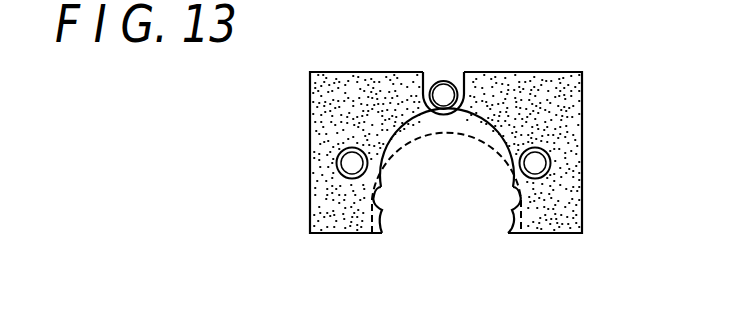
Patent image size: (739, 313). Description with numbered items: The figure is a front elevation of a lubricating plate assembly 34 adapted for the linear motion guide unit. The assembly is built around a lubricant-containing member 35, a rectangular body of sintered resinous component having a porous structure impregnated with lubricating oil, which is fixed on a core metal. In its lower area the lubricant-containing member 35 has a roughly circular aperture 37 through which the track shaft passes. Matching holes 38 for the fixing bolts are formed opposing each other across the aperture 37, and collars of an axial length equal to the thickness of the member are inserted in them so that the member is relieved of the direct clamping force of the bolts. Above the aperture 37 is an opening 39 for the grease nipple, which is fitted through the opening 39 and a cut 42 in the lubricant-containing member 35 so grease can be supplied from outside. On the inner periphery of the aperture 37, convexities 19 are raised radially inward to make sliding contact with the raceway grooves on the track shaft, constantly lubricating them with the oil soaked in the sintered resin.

The convexities 19 is at (384, 209).
The lubricating plate assembly 34 is at (524, 69).
The lubricant-containing member 35 is at (550, 97).
The aperture 37 is at (456, 199).
The matching holes 38 is at (349, 164).
The opening 39 is at (443, 90).
The cut 42 is at (433, 77).